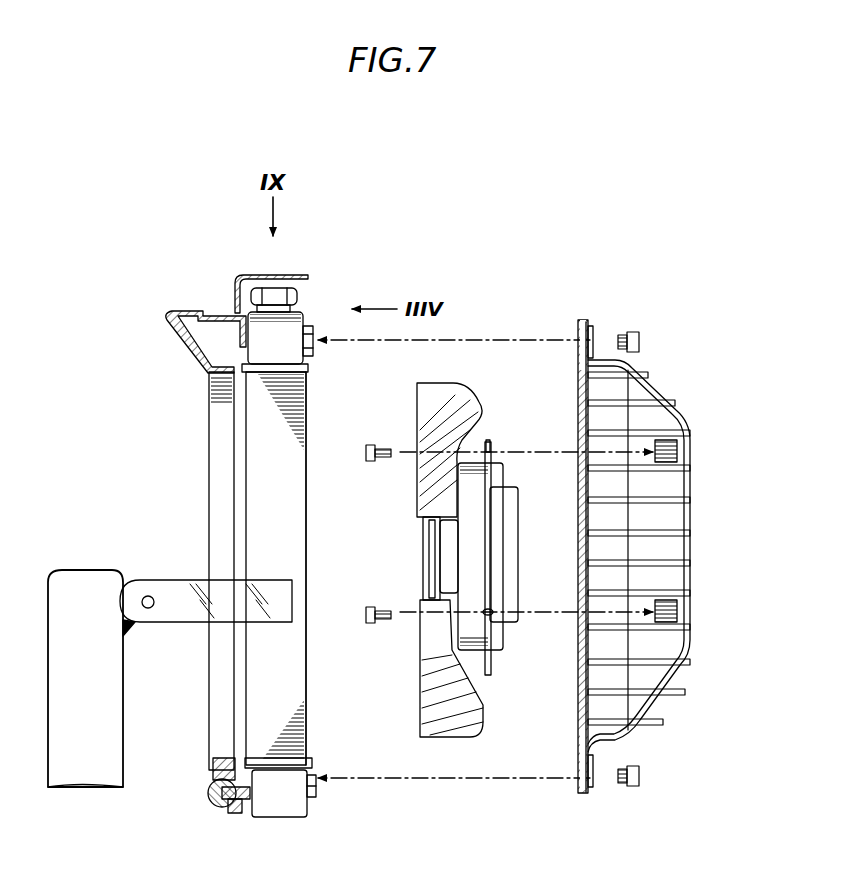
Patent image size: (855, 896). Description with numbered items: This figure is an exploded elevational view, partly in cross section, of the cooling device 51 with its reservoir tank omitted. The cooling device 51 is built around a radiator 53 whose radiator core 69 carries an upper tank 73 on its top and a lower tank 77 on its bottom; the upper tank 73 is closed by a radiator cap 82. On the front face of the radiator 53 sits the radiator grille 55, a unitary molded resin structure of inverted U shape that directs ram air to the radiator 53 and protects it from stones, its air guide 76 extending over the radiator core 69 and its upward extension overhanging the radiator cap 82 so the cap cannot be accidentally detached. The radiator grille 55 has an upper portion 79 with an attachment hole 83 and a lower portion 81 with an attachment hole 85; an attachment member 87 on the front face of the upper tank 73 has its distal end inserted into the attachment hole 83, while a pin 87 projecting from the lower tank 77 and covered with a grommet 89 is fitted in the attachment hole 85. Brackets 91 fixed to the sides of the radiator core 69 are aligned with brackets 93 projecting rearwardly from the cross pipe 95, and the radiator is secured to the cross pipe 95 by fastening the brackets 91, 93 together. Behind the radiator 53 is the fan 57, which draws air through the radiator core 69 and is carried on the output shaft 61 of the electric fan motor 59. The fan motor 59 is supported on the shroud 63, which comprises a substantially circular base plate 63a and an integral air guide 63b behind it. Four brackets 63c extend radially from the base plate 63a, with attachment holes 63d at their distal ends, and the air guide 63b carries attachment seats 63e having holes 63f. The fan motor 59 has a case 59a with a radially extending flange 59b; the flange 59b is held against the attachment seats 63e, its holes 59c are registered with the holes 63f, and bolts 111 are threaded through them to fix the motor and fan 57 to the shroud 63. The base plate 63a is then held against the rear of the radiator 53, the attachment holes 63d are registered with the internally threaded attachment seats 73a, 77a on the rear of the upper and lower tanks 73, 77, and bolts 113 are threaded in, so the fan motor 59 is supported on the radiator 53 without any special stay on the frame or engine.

The cooling device 51 is at (471, 297).
The radiator 53 is at (308, 537).
The radiator grille 55 is at (172, 318).
The fan 57 is at (463, 385).
The electric fan motor 59 is at (510, 508).
The case 59a is at (512, 542).
The flange 59b is at (497, 668).
The holes 59c is at (490, 452).
The output shaft 61 is at (428, 556).
The shroud 63 is at (638, 557).
The base plate 63a is at (580, 740).
The air guide 63b is at (683, 672).
The brackets 63c is at (580, 324).
The attachment holes 63d is at (593, 334).
The attachment seats 63e is at (680, 446).
The holes 63f is at (640, 455).
The radiator core 69 is at (290, 680).
The upper tank 73 is at (305, 366).
The attachment seat 73a is at (318, 333).
The air guide 76 is at (216, 422).
The lower tank 77 is at (283, 800).
The attachment seat 77a is at (320, 792).
The upper portion 79 is at (280, 290).
The lower portion 81 is at (222, 760).
The radiator cap 82 is at (300, 274).
The attachment hole 83 is at (200, 312).
The attachment hole 85 is at (238, 815).
The attachment member 87 is at (228, 316).
The grommet 89 is at (208, 790).
The brackets 91 is at (170, 580).
The brackets 93 is at (130, 627).
The cross pipe 95 is at (82, 568).
The bolts 111 is at (368, 456).
The bolts 113 is at (642, 340).